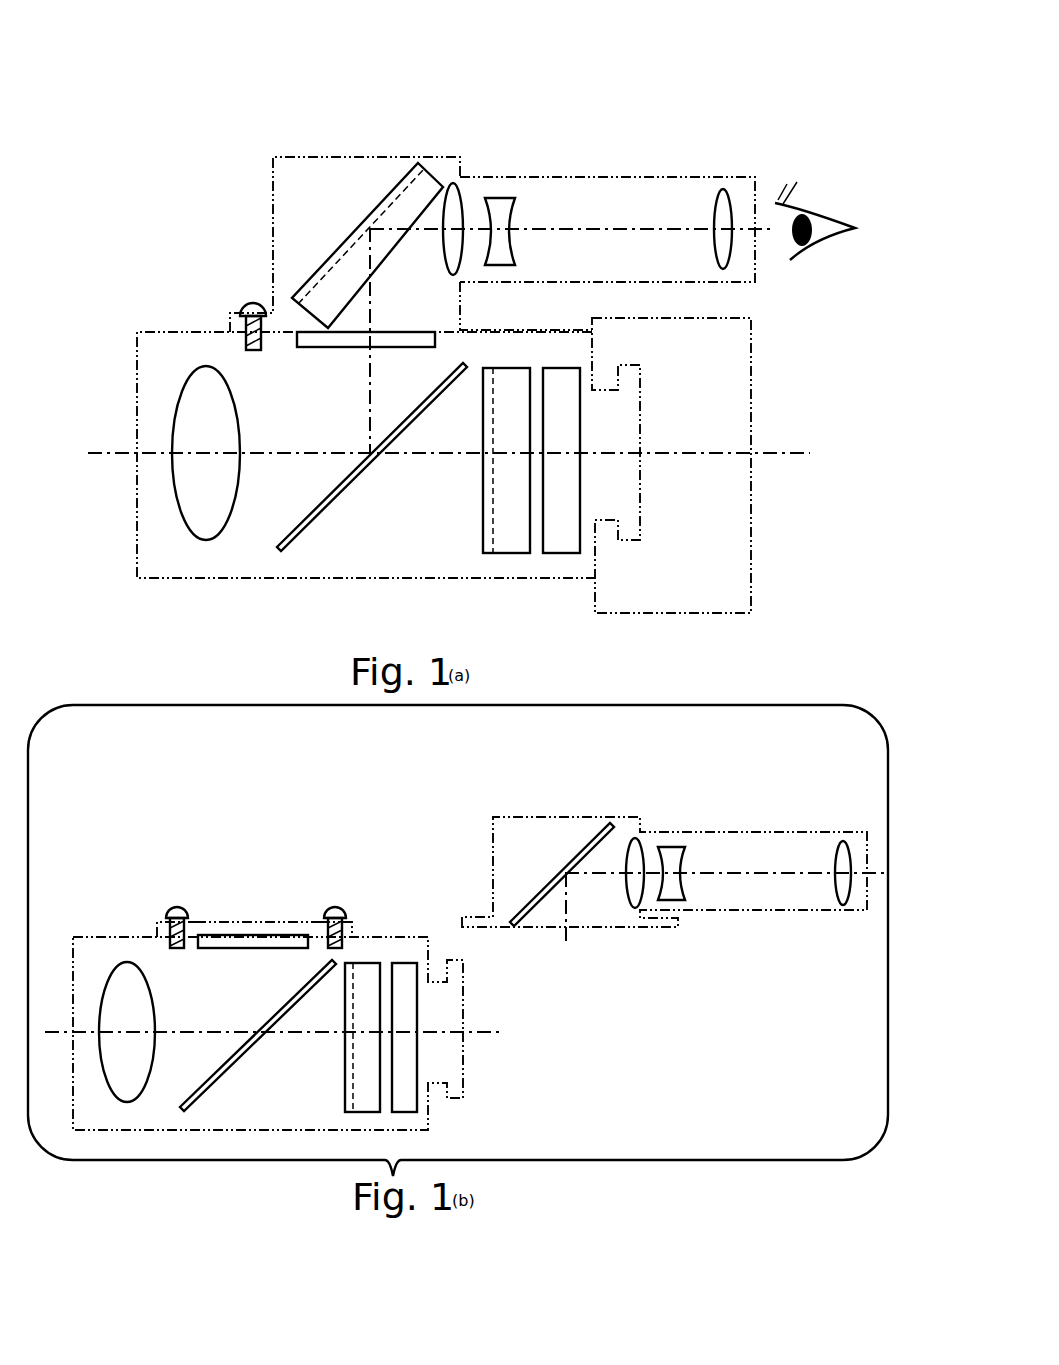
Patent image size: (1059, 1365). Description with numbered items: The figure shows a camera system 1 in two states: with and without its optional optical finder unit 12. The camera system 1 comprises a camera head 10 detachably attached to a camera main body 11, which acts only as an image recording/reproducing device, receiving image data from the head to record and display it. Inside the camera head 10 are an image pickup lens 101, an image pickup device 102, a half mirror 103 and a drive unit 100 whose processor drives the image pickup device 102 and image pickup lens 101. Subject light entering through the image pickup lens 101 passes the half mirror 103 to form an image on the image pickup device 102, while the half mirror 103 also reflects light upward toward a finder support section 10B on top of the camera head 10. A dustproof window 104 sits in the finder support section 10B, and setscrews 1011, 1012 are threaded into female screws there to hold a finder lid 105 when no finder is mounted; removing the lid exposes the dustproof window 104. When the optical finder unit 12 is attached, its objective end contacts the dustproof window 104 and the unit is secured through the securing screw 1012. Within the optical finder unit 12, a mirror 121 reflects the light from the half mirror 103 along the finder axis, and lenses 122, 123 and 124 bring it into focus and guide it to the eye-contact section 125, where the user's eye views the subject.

In FIG. 1A, the camera system 1 is at (532, 84).
In FIG. 1B, the camera system 1 is at (540, 789).
In FIG. 1A, the camera head 10 is at (395, 582).
In FIG. 1B, the camera head 10 is at (268, 1033).
In FIG. 1A, the finder support section 10B is at (447, 330).
In FIG. 1B, the finder support section 10B is at (192, 928).
In FIG. 1A, the camera main body 11 is at (753, 360).
In FIG. 1A, the optical finder unit 12 is at (565, 177).
In FIG. 1B, the optical finder unit 12 is at (762, 832).
In FIG. 1A, the drive unit 100 is at (557, 368).
In FIG. 1B, the drive unit 100 is at (420, 1073).
In FIG. 1A, the image pickup lens 101 is at (225, 510).
In FIG. 1B, the image pickup lens 101 is at (137, 1073).
In FIG. 1A, the image pickup device 102 is at (493, 533).
In FIG. 1B, the image pickup device 102 is at (345, 1060).
In FIG. 1A, the half mirror 103 is at (323, 508).
In FIG. 1B, the half mirror 103 is at (208, 1080).
In FIG. 1A, the dustproof window 104 is at (400, 348).
In FIG. 1B, the dustproof window 104 is at (232, 948).
In FIG. 1B, the finder lid 105 is at (268, 922).
In FIG. 1A, the mirror 121 is at (381, 277).
In FIG. 1A, the lens 122 is at (451, 254).
In FIG. 1B, the lens 122 is at (577, 874).
In FIG. 1A, the lens 123 is at (507, 258).
In FIG. 1B, the lens 123 is at (671, 873).
In FIG. 1A, the lens 124 is at (720, 243).
In FIG. 1B, the lens 124 is at (843, 873).
In FIG. 1A, the eye-contact section 125 is at (755, 188).
In FIG. 1B, the setscrew 1011 is at (348, 887).
In FIG. 1A, the setscrew 1012 is at (253, 303).
In FIG. 1B, the setscrew 1012 is at (175, 907).